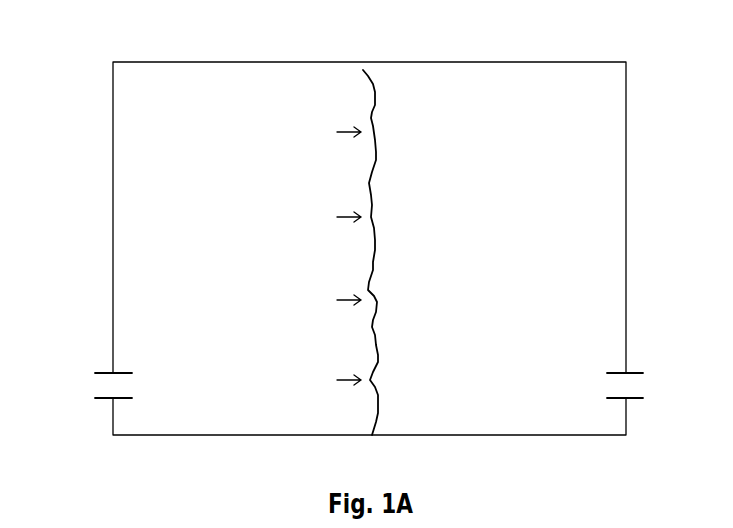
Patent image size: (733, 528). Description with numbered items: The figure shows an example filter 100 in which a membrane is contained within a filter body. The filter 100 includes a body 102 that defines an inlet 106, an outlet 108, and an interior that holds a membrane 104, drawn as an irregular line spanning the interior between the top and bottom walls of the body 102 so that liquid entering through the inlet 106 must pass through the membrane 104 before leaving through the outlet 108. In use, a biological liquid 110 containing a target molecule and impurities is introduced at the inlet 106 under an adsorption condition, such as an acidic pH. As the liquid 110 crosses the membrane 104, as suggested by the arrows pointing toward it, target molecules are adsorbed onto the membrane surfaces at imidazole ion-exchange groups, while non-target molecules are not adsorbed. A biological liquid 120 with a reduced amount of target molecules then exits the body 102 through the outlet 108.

The filter 100 is at (168, 474).
The body 102 is at (432, 70).
The membrane 104 is at (371, 118).
The inlet 106 is at (110, 400).
The outlet 108 is at (630, 399).
The biological liquid 110 is at (130, 391).
The biological liquid 120 is at (597, 387).